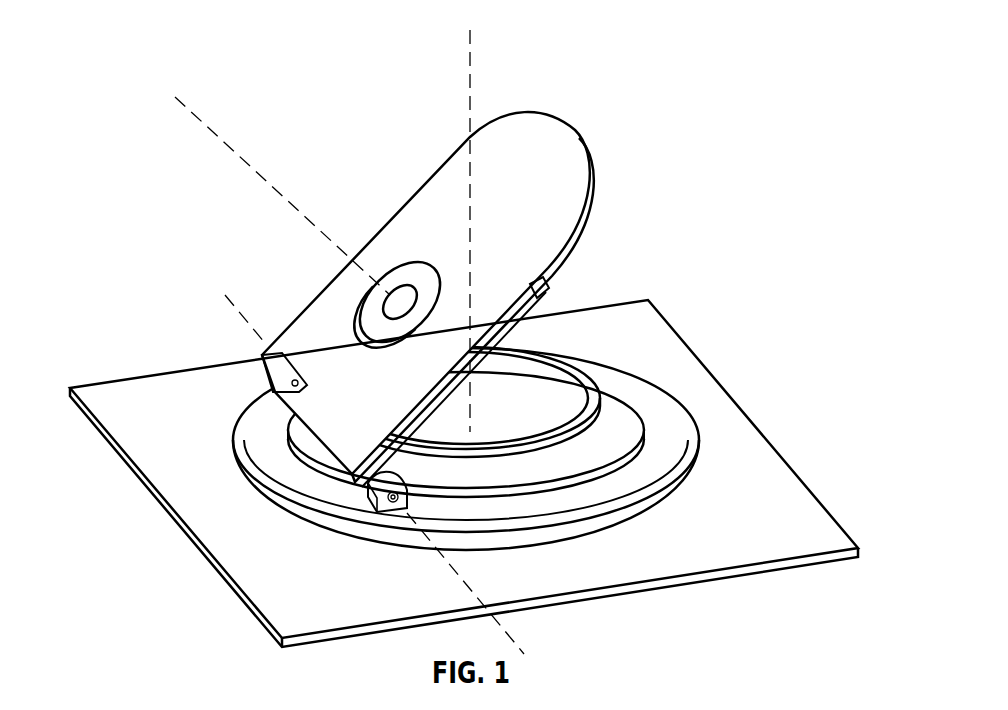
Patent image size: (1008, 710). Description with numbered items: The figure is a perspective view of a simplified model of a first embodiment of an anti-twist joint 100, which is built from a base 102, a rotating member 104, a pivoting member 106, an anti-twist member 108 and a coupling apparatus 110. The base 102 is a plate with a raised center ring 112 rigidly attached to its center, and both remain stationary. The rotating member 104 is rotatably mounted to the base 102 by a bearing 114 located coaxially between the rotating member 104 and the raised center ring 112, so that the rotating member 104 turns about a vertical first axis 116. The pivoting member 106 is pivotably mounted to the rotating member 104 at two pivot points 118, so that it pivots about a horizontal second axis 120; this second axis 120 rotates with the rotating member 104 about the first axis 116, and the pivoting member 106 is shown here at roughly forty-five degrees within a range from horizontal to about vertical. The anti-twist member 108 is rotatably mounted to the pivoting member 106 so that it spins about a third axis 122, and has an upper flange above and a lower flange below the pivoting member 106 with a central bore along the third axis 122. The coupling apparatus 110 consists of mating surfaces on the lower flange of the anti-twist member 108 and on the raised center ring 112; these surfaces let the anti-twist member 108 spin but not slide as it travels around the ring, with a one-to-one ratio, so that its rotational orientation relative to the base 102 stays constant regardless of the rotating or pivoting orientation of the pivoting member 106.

The anti-twist joint 100 is at (137, 177).
The base 102 is at (762, 503).
The rotating member 104 is at (677, 445).
The pivoting member 106 is at (566, 172).
The anti-twist member 108 is at (406, 268).
The coupling apparatus 110 is at (720, 260).
The raised center ring 112 is at (590, 373).
The bearing 114 is at (628, 412).
The first axis 116 is at (470, 62).
The pivot points 118 is at (292, 392).
The second axis 120 is at (228, 298).
The third axis 122 is at (288, 197).